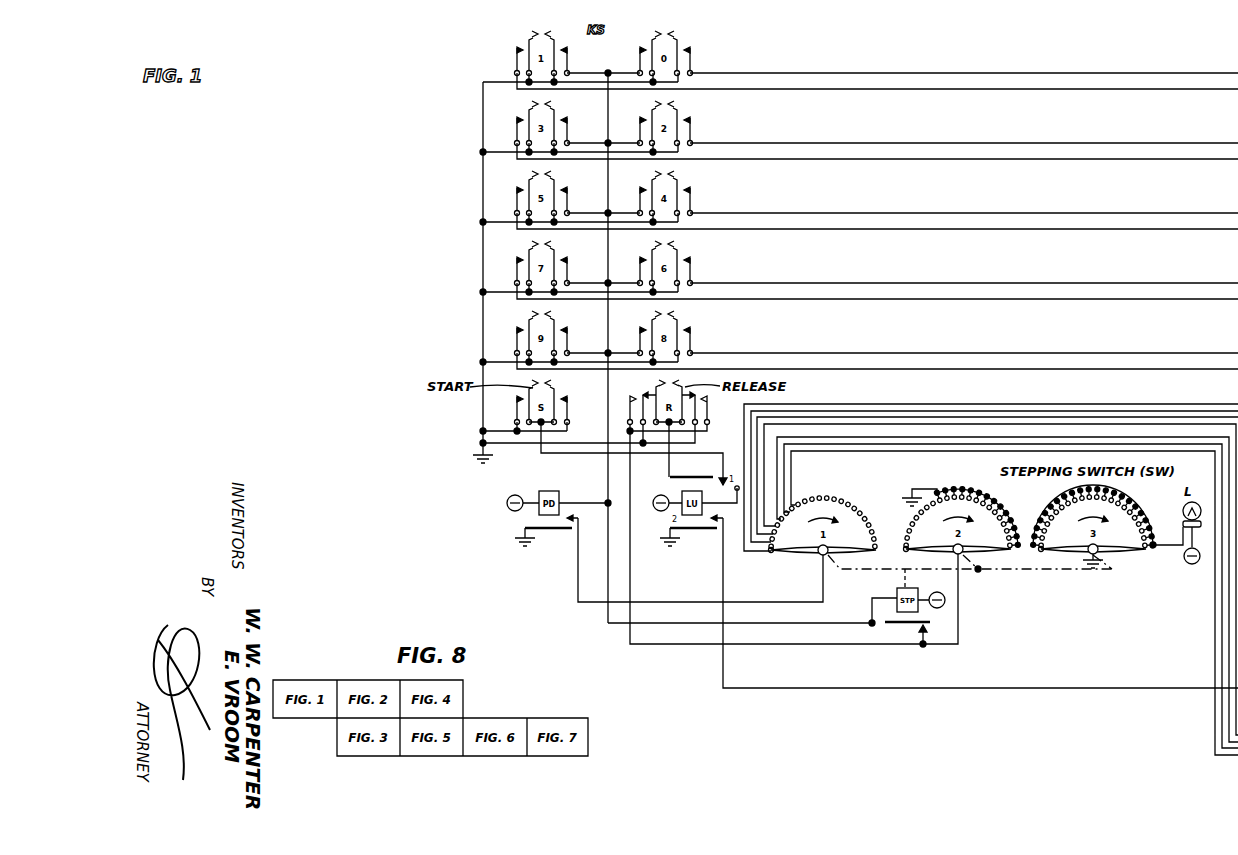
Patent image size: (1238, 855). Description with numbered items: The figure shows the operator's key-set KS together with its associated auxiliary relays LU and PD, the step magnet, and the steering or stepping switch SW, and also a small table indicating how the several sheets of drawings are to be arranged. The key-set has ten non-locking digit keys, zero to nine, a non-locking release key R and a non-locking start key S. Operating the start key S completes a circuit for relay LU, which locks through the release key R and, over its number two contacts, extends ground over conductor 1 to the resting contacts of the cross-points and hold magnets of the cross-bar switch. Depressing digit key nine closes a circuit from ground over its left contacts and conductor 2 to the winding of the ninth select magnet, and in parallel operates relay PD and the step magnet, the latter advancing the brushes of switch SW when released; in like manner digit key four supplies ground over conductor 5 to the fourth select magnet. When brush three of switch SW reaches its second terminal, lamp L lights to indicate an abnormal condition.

The conductor 1 is at (1063, 688).
The conductor 2 is at (1165, 371).
The conductor 5 is at (1045, 212).